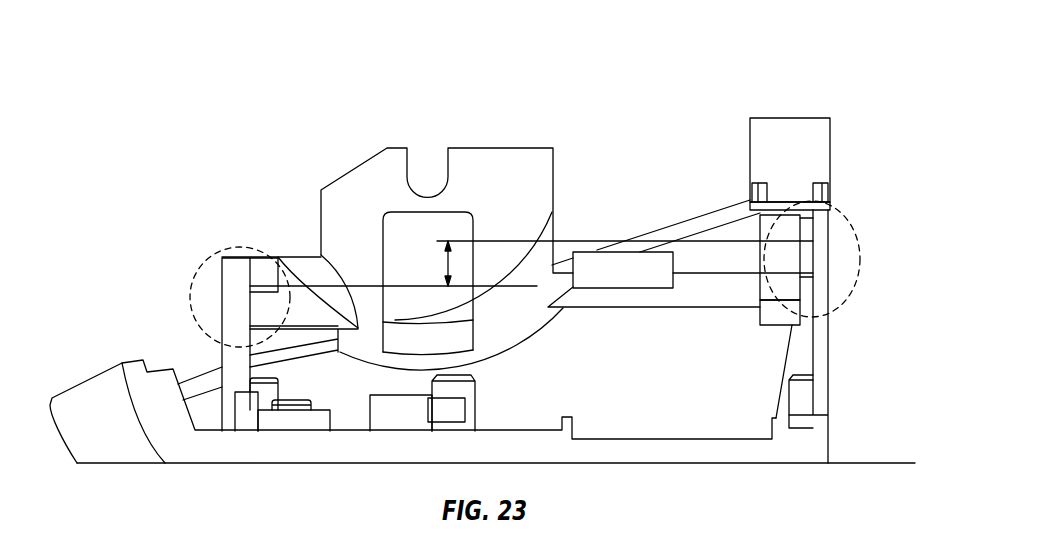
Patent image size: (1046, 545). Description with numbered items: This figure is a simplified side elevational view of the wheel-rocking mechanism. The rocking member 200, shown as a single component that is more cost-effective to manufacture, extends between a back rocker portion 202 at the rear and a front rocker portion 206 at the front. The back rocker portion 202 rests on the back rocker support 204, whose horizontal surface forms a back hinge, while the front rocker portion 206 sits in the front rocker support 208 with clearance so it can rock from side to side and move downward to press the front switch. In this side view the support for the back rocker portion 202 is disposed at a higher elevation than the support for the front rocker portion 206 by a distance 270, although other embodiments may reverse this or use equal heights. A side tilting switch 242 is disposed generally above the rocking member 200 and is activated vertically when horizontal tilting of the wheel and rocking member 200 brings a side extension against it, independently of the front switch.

The rocking member 200 is at (500, 153).
The back rocker portion 202 is at (852, 228).
The back rocker support 204 is at (792, 360).
The front rocker portion 206 is at (210, 258).
The front rocker support 208 is at (227, 360).
The side tilting switch 242 is at (818, 123).
The distance 270 is at (443, 263).